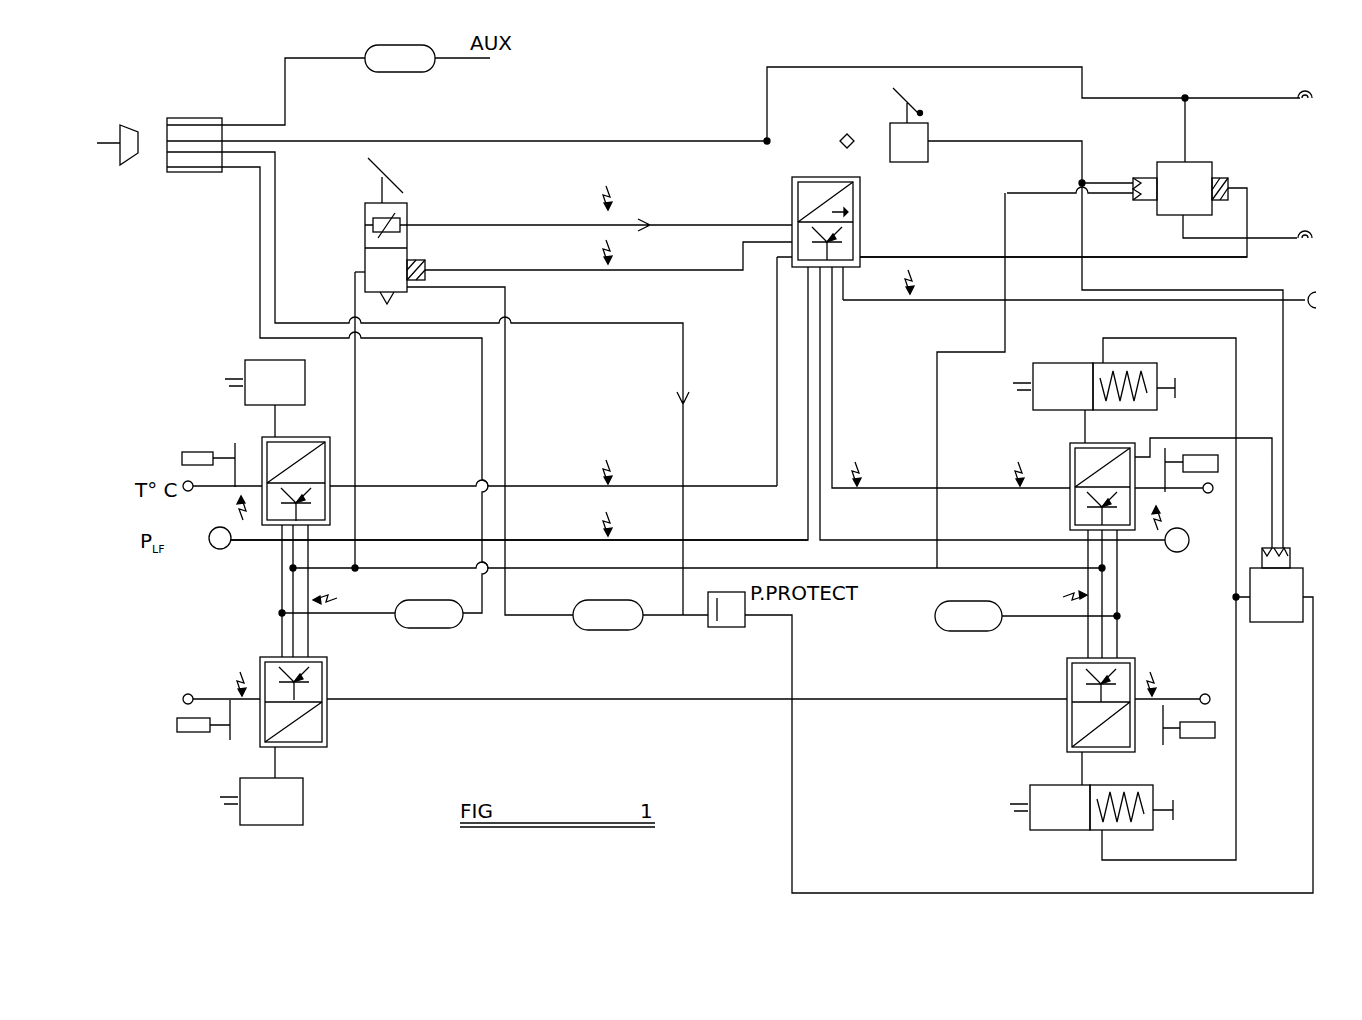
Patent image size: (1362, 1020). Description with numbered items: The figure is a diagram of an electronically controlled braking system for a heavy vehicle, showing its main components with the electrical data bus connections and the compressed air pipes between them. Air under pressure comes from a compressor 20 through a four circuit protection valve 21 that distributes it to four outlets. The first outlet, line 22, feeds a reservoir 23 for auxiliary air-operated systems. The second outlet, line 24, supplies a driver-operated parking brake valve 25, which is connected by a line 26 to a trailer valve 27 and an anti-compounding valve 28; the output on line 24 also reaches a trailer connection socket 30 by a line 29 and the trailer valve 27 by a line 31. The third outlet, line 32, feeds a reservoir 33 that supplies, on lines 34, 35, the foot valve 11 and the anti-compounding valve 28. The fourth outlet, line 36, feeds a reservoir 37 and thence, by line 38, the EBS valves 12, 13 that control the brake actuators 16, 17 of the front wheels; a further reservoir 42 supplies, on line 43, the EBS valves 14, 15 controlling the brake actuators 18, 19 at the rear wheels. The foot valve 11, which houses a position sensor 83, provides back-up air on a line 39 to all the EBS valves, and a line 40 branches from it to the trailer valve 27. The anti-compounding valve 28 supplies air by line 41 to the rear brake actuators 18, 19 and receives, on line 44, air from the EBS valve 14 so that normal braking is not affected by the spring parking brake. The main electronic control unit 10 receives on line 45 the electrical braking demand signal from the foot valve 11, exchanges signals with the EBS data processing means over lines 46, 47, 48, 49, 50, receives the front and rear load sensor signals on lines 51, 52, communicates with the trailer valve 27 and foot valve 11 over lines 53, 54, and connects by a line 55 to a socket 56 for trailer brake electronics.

The main electronic control unit 10 is at (860, 203).
The foot valve 11 is at (407, 212).
The EBS valve 12 is at (300, 437).
The EBS valve 13 is at (325, 730).
The EBS valve 14 is at (1070, 455).
The EBS valve 15 is at (1072, 728).
The brake actuator 16 is at (265, 398).
The brake actuator 17 is at (261, 786).
The brake actuator 18 is at (1094, 403).
The brake actuator 19 is at (1091, 791).
The compressor 20 is at (130, 167).
The four circuit protection valve 21 is at (205, 172).
The line 22 is at (285, 100).
The reservoir 23 is at (427, 58).
The line 24 is at (647, 141).
The parking brake valve 25 is at (928, 128).
The line 26 is at (1060, 141).
The trailer valve 27 is at (1097, 209).
The anti-compounding valve 28 is at (1276, 585).
The line 29 is at (812, 67).
The trailer connection socket 30 is at (1298, 92).
The line 31 is at (1190, 140).
The line 32 is at (275, 210).
The reservoir 33 is at (640, 615).
The line 34 is at (521, 615).
The line 35 is at (792, 776).
The line 36 is at (260, 232).
The reservoir 37 is at (372, 614).
The line 38 is at (388, 610).
The line 39 is at (355, 395).
The line 40 is at (937, 402).
The line 41 is at (1236, 615).
The reservoir 42 is at (1026, 616).
The line 43 is at (1010, 620).
The line 44 is at (1170, 438).
The line 45 is at (520, 225).
The line 46 is at (402, 486).
The line 47 is at (308, 655).
The line 48 is at (440, 699).
The line 49 is at (1075, 590).
The line 50 is at (905, 488).
The line 51 is at (530, 540).
The line 52 is at (1015, 540).
The line 53 is at (972, 257).
The line 54 is at (680, 270).
The line 55 is at (950, 300).
The socket 56 is at (1329, 301).
The position sensor 83 is at (367, 240).